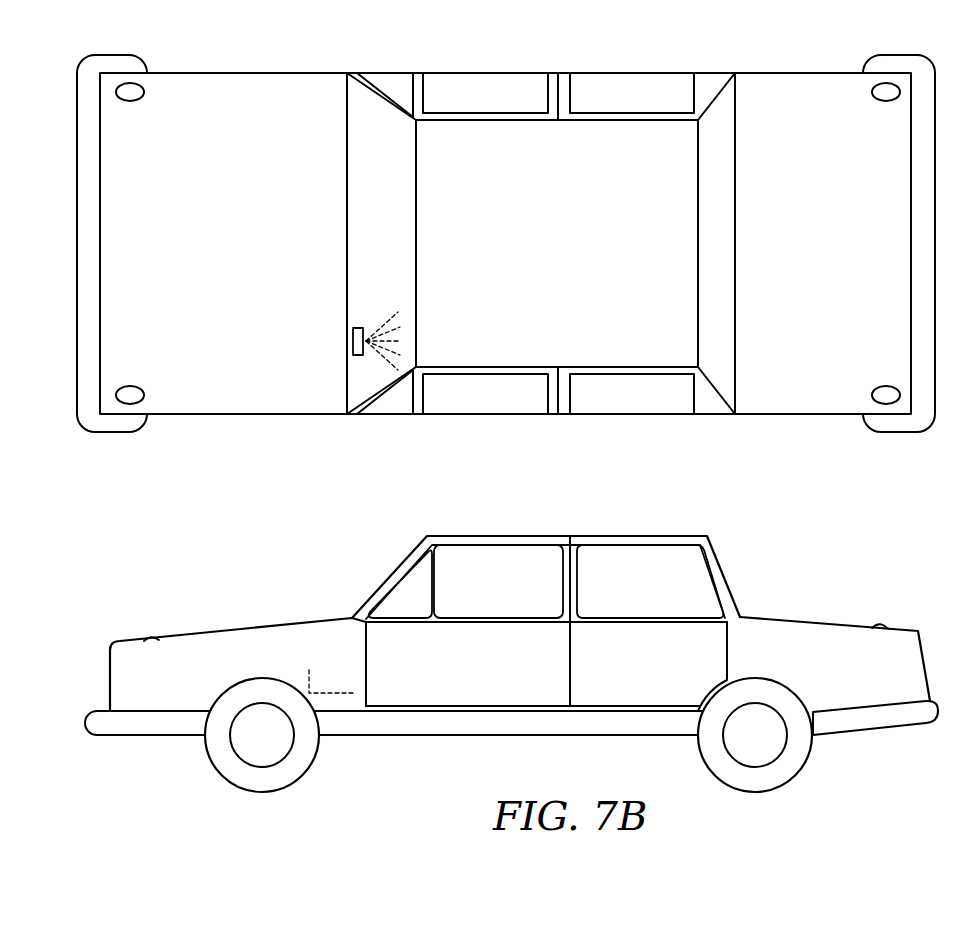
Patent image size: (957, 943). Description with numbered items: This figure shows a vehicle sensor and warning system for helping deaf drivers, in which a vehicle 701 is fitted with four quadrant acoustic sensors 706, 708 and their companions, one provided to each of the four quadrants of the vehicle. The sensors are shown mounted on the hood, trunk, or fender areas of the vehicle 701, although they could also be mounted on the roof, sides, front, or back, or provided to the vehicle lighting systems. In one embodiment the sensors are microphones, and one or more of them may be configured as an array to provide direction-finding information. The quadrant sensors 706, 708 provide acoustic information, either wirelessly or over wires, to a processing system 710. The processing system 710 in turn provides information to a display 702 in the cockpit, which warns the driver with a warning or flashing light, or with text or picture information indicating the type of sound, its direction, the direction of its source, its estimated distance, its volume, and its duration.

The vehicle 701 is at (656, 73).
The display 702 is at (360, 328).
The quadrant sensor 706 is at (143, 388).
The quadrant sensor 708 is at (877, 388).
The processing system 710 is at (317, 672).